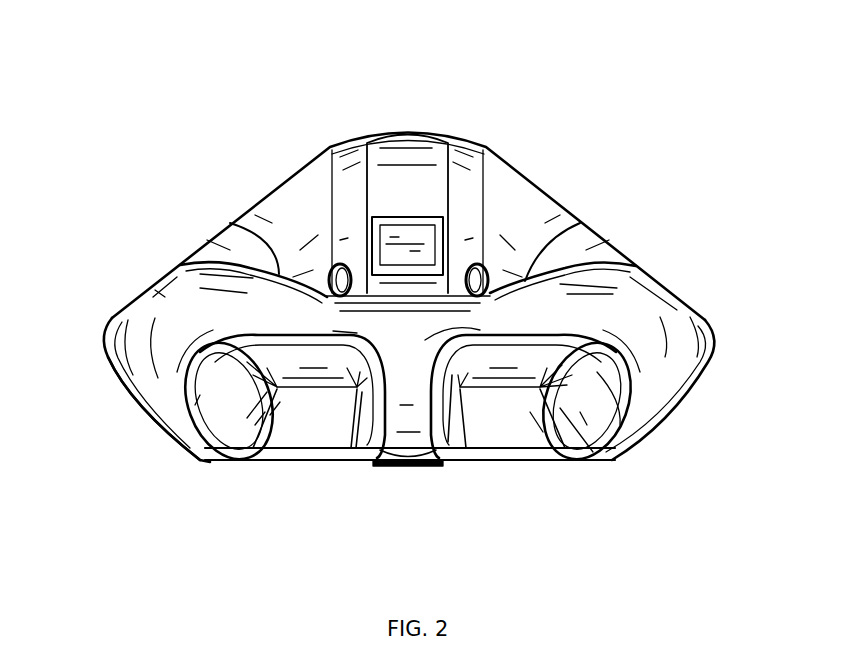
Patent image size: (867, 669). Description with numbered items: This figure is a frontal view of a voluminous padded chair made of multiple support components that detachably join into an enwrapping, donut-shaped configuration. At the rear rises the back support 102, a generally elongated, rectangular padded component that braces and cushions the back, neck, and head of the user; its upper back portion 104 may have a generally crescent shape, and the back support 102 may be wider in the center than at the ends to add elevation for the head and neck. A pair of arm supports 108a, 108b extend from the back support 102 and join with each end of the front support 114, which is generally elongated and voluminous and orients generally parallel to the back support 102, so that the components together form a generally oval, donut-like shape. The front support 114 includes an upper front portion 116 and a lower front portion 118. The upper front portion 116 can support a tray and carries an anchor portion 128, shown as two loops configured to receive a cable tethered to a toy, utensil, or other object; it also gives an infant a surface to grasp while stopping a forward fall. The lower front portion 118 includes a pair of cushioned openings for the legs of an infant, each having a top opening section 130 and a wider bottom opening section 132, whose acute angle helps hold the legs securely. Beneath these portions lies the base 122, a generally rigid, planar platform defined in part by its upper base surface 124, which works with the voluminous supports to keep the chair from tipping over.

The back support 102 is at (430, 199).
The upper back portion 104 is at (413, 130).
The arm support 108a is at (248, 240).
The arm support 108b is at (598, 240).
The front support 114 is at (430, 349).
The upper front portion 116 is at (170, 278).
The lower front portion 118 is at (172, 440).
The base 122 is at (318, 463).
The upper base surface 124 is at (330, 436).
The anchor portion 128 is at (333, 268).
The top opening section 130 is at (577, 333).
The bottom opening section 132 is at (577, 442).